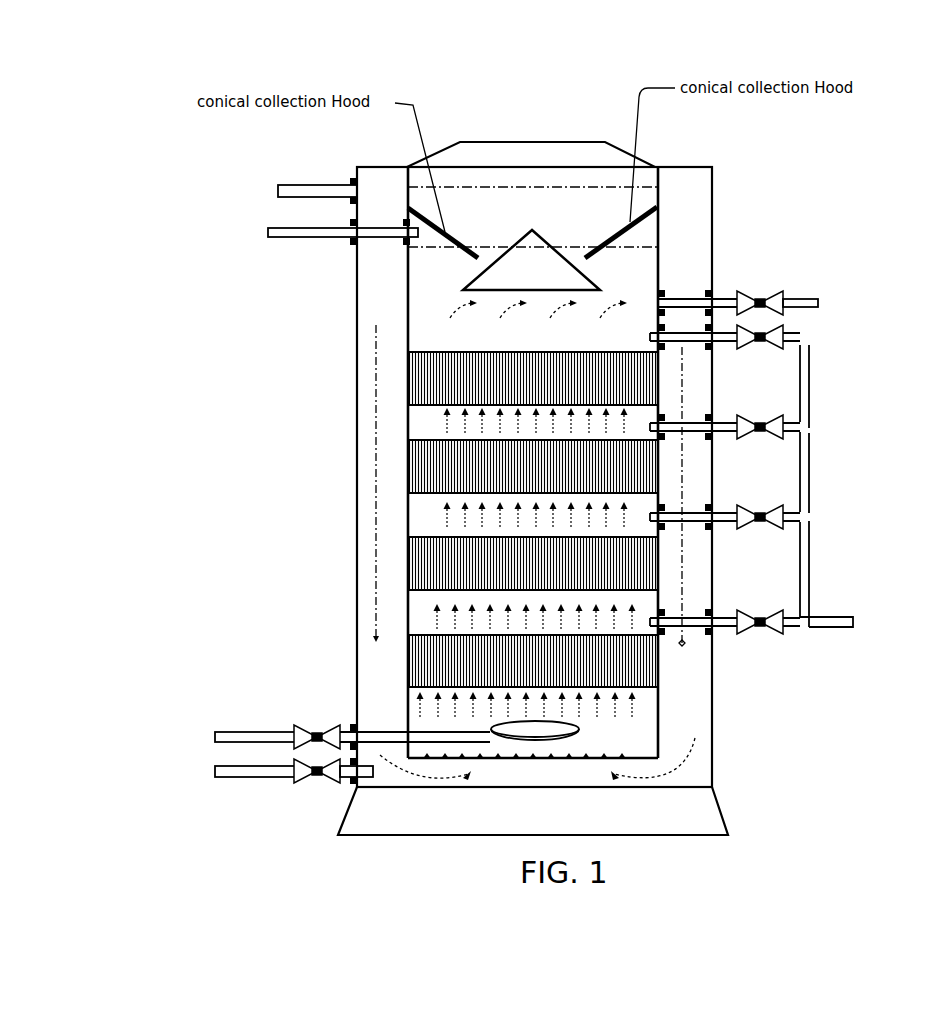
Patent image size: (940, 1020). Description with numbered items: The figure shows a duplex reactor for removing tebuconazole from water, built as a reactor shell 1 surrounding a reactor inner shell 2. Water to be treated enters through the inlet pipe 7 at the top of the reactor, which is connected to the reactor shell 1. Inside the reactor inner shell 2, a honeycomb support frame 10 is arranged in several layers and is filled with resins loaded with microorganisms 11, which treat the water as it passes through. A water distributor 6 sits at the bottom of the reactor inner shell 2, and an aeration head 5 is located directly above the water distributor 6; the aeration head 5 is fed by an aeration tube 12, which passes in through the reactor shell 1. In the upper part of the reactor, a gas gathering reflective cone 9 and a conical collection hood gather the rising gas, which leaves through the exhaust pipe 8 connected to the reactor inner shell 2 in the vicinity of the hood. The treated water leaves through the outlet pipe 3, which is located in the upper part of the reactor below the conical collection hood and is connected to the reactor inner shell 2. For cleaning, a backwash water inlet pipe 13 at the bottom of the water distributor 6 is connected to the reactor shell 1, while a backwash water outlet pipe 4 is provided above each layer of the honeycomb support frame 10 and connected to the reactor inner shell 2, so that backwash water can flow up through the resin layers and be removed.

The reactor shell 1 is at (585, 488).
The reactor inner shell 2 is at (614, 462).
The outlet pipe 3 is at (783, 283).
The backwash water outlet pipe 4 is at (784, 479).
The aeration head 5 is at (653, 707).
The water distributor 6 is at (597, 751).
The inlet pipe 7 is at (261, 164).
The exhaust pipe 8 is at (284, 219).
The gas gathering reflective cone 9 is at (389, 274).
The honeycomb support frame 10 is at (404, 410).
The resins loaded with microorganisms 11 is at (418, 477).
The aeration tube 12 is at (320, 720).
The backwash water inlet pipe 13 is at (261, 792).